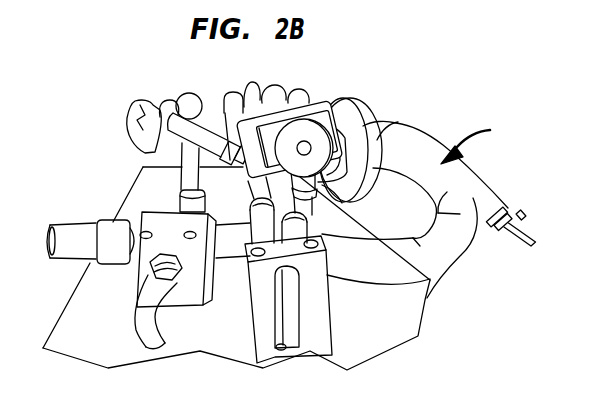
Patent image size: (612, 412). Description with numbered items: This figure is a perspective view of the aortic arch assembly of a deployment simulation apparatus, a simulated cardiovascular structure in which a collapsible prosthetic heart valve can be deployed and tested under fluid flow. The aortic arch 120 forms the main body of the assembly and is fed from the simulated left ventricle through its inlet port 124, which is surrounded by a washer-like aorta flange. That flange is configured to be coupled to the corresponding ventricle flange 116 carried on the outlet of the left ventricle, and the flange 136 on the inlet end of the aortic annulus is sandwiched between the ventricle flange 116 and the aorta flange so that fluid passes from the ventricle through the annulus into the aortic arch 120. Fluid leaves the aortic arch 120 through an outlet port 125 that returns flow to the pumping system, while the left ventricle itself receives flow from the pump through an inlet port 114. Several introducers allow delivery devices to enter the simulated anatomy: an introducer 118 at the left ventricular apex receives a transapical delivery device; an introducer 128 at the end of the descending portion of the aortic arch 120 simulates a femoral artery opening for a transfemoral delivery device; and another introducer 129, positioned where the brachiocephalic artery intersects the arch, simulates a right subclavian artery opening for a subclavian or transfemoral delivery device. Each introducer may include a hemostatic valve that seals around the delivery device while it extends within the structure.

The inlet port 114 is at (309, 175).
The ventricle flange 116 is at (430, 280).
The introducer 118 is at (304, 141).
The aortic arch 120 is at (479, 141).
The inlet port 124 is at (384, 126).
The outlet port 125 is at (185, 307).
The introducer 128 is at (77, 235).
The introducer 129 is at (533, 246).
The flange 136 is at (357, 121).